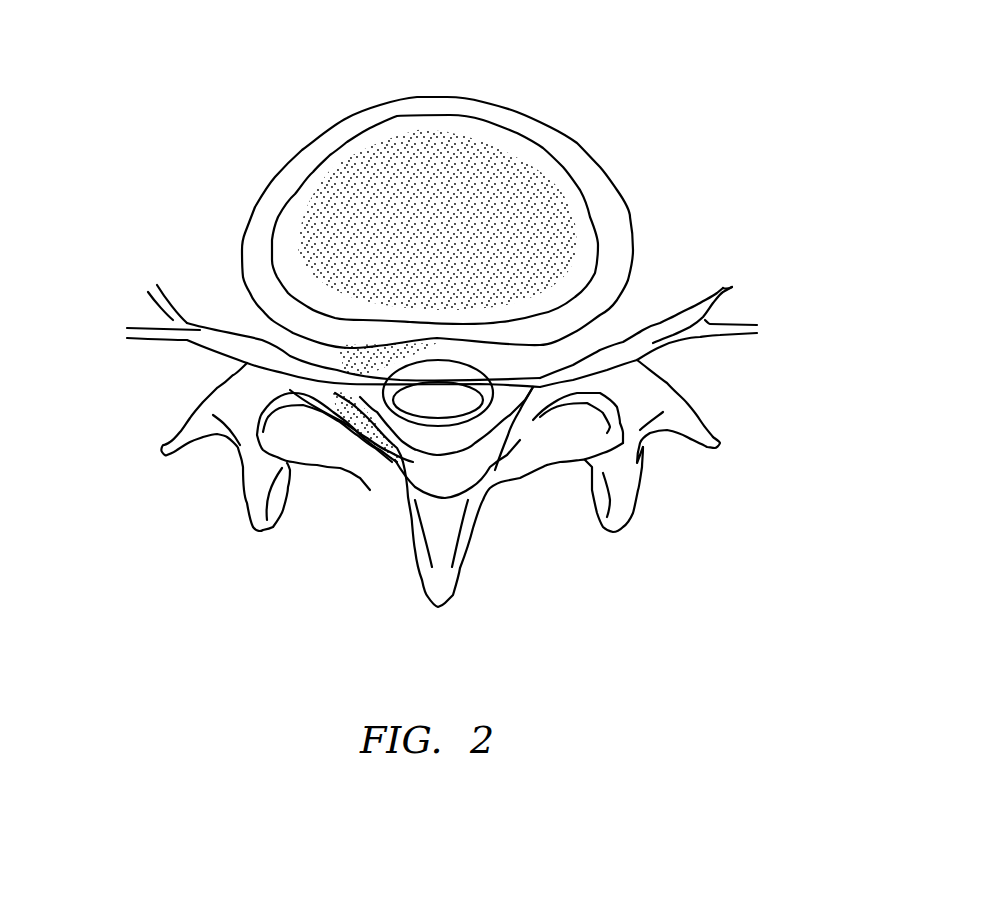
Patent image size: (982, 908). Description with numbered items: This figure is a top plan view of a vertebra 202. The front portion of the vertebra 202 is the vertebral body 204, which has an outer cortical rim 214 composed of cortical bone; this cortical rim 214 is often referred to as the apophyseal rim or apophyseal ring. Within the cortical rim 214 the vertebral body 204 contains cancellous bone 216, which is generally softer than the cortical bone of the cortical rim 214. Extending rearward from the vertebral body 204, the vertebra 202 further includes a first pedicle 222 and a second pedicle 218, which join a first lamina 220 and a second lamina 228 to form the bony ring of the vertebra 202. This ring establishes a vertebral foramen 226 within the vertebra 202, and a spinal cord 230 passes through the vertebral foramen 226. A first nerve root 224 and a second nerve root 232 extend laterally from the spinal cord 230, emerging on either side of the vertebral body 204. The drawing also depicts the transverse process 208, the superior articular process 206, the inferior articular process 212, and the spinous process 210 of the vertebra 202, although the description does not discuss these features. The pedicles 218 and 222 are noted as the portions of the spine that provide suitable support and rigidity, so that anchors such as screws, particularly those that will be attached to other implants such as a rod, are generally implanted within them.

The vertebra 202 is at (594, 55).
The vertebral body 204 is at (579, 133).
The cortical rim 214 is at (257, 247).
The cancellous bone 216 is at (347, 190).
The second pedicle 218 is at (269, 339).
The second nerve root 232 is at (175, 326).
The first pedicle 222 is at (604, 312).
The first nerve root 224 is at (710, 320).
The left transverse process 208 is at (162, 452).
The left superior articular process 206 is at (238, 473).
The left inferior articular process 212 is at (253, 530).
The second lamina 228 is at (373, 440).
The vertebral foramen 226 is at (412, 442).
The spinous process 210 is at (436, 600).
The spinal cord 230 is at (447, 405).
The first lamina 220 is at (521, 425).